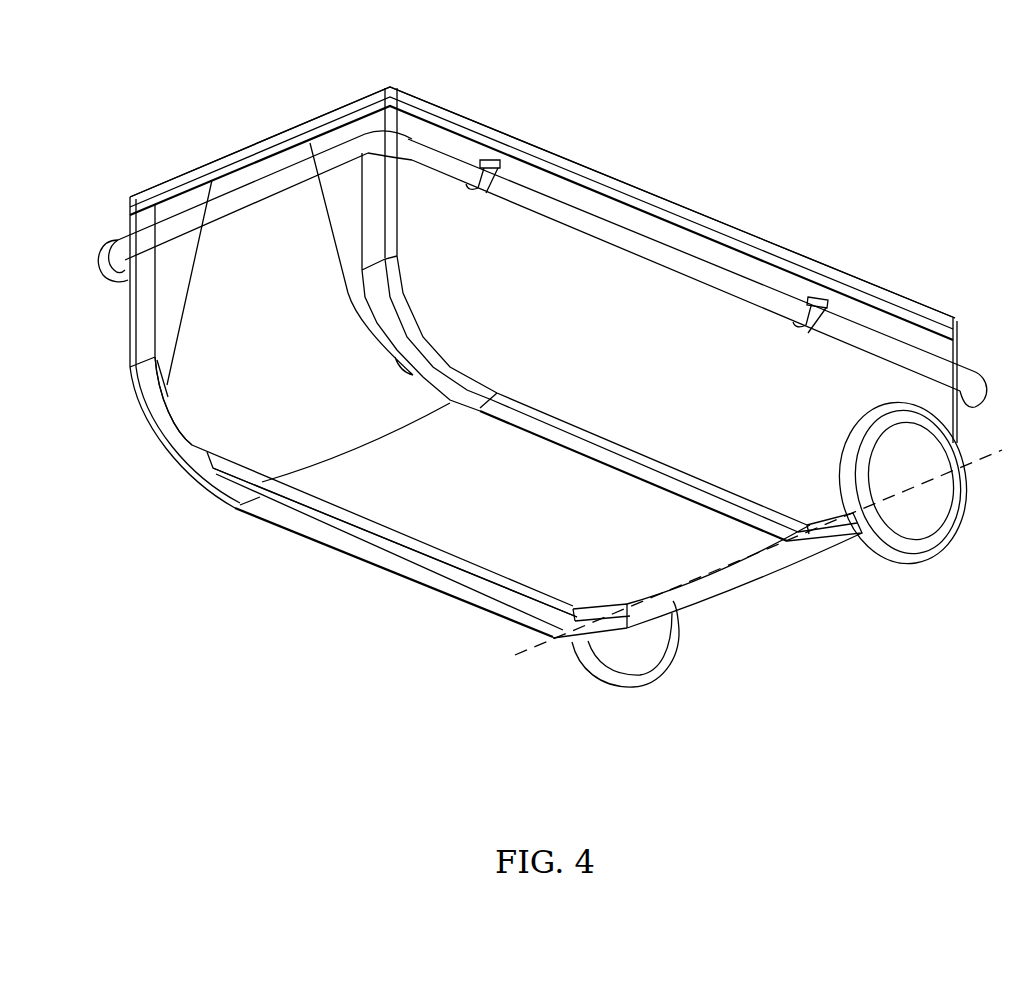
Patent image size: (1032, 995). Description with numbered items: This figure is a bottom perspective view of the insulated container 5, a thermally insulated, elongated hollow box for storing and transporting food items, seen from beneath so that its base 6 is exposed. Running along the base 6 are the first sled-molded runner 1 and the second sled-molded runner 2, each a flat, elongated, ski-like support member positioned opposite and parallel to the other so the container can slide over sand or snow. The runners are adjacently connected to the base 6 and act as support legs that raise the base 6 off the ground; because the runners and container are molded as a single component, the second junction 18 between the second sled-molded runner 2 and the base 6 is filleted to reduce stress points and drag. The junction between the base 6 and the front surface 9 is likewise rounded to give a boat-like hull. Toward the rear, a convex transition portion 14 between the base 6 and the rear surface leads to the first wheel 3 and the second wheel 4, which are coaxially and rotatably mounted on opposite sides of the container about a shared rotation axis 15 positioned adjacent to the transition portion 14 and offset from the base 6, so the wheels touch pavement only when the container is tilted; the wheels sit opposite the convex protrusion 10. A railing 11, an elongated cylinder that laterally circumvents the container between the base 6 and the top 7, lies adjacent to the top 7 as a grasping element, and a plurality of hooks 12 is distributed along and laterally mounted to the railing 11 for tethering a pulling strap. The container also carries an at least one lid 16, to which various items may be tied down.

The first sled-molded runner 1 is at (593, 452).
The second sled-molded runner 2 is at (320, 538).
The first wheel 3 is at (928, 556).
The second wheel 4 is at (622, 680).
The insulated container 5 is at (637, 342).
The base 6 is at (513, 548).
The top 7 is at (612, 128).
The front surface 9 is at (185, 203).
The convex protrusion 10 is at (187, 415).
The railing 11 is at (700, 277).
The plurality of hooks 12 is at (480, 193).
The transition portion 14 is at (763, 582).
The shared rotation axis 15 is at (1002, 450).
The lid 16 is at (505, 143).
The second junction 18 is at (378, 535).